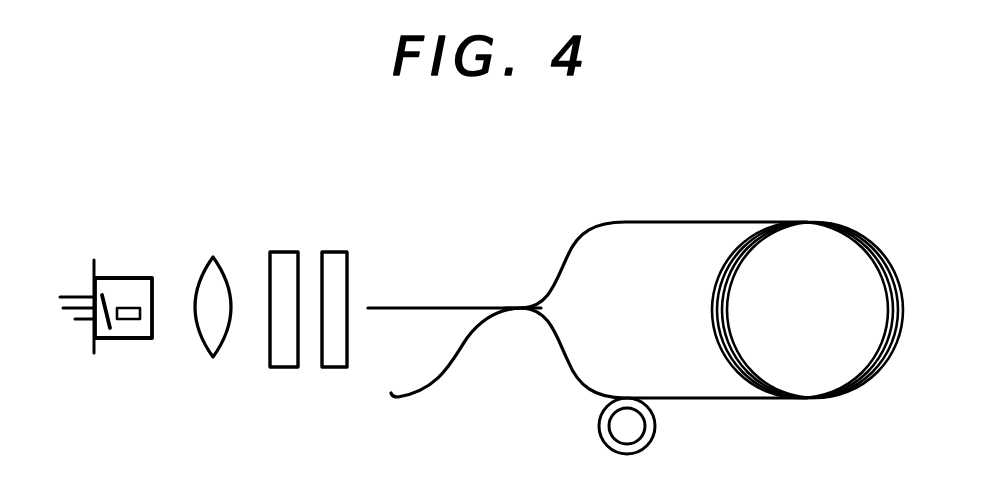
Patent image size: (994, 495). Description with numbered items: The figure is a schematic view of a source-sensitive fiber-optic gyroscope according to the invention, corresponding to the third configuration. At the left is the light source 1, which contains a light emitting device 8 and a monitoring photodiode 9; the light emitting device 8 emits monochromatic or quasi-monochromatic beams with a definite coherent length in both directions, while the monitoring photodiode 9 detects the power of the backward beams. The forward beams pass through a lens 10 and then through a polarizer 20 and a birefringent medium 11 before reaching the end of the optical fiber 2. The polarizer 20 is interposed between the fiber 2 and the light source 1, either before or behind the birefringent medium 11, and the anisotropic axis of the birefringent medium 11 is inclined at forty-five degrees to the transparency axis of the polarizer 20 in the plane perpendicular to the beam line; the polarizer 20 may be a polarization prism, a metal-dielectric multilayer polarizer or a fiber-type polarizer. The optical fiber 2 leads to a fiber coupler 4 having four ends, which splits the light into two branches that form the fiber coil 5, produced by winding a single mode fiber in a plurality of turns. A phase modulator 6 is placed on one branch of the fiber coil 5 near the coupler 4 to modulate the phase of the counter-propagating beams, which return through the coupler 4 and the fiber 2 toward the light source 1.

The light source 1 is at (119, 293).
The light emitting device 8 is at (131, 318).
The monitoring photodiode 9 is at (106, 324).
The lens 10 is at (207, 283).
The polarizer 20 is at (281, 279).
The birefringent medium 11 is at (338, 355).
The optical fiber 2 is at (428, 307).
The fiber coupler 4 is at (507, 312).
The fiber coil 5 is at (802, 220).
The phase modulator 6 is at (610, 440).